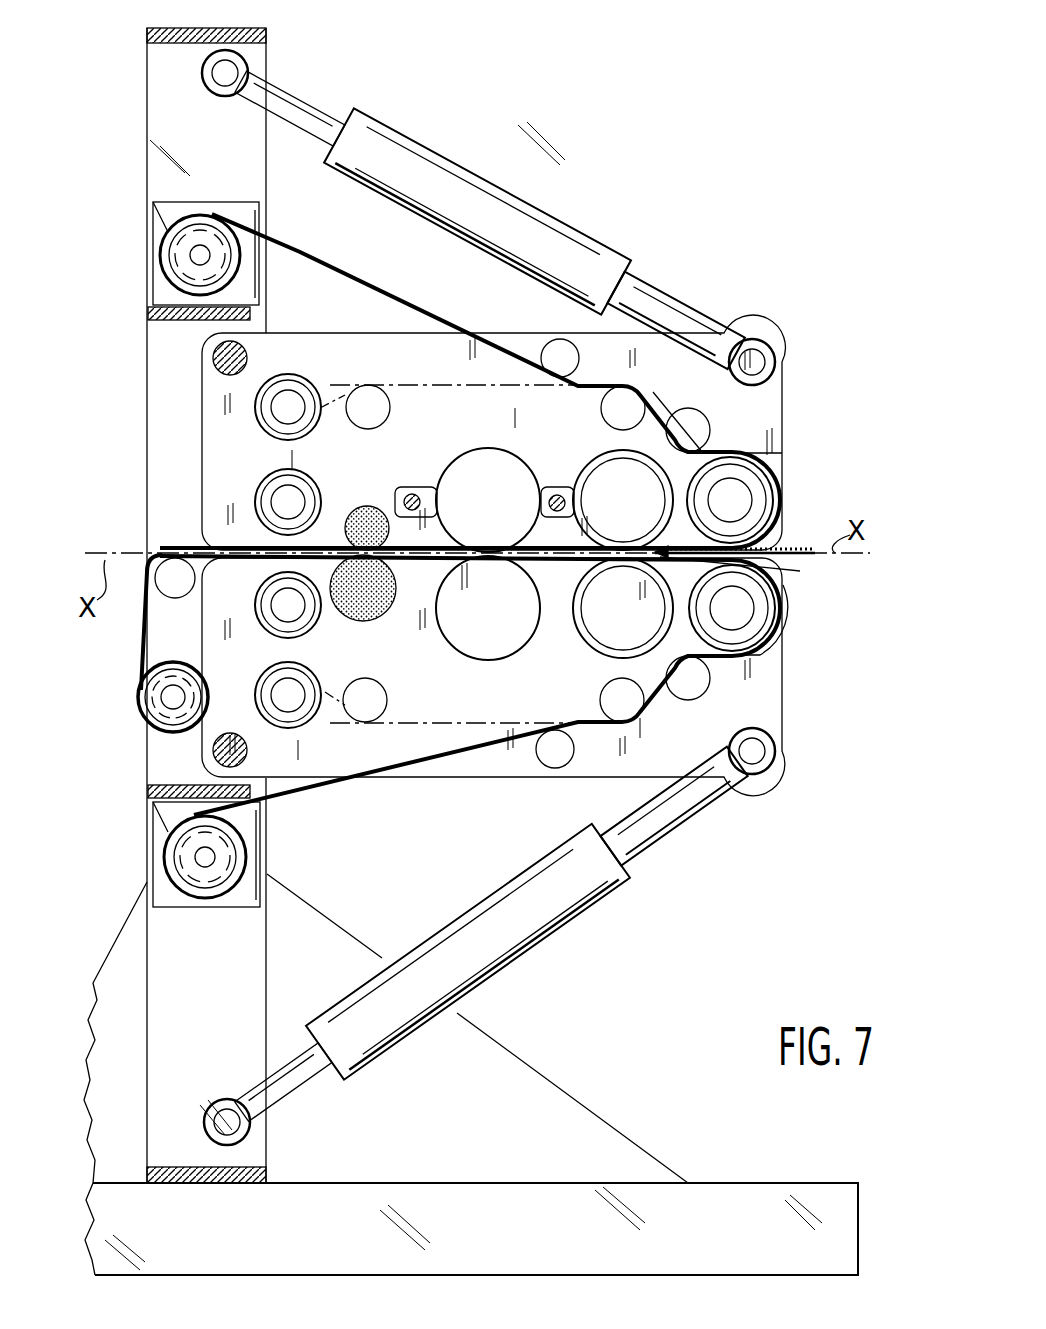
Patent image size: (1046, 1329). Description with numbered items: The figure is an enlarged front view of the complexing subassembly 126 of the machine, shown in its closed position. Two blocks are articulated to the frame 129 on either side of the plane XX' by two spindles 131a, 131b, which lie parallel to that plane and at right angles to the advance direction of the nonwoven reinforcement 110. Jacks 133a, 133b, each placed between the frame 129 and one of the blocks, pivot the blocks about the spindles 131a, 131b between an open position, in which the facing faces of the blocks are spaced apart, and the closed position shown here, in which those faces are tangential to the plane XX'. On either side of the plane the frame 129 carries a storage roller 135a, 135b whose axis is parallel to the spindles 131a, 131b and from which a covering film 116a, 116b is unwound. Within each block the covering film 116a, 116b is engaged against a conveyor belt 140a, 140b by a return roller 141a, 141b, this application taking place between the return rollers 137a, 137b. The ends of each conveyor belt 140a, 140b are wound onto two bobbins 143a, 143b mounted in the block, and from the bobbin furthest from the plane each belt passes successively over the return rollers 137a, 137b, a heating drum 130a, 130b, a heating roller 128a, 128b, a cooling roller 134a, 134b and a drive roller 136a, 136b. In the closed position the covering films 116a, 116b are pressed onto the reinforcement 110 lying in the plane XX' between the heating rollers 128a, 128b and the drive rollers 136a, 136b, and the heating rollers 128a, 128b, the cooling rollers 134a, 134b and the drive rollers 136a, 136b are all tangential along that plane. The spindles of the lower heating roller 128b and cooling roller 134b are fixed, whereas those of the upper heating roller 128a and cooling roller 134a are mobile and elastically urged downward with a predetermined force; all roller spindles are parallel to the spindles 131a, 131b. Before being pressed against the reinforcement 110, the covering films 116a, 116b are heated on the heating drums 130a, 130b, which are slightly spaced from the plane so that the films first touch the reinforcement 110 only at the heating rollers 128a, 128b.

The nonwoven reinforcement 110 is at (800, 558).
The covering film 116a is at (332, 278).
The covering film 116b is at (291, 798).
The complexing subassembly 126 is at (620, 188).
The heating roller 128a is at (600, 485).
The heating roller 128b is at (600, 622).
The frame 129 is at (155, 78).
The heating drum 130a is at (742, 497).
The heating drum 130b is at (742, 615).
The spindle 131a is at (227, 358).
The spindle 131b is at (227, 750).
The jack 133a is at (447, 172).
The jack 133b is at (552, 905).
The cooling roller 134a is at (470, 478).
The cooling roller 134b is at (470, 630).
The storage roller 135a is at (178, 256).
The storage roller 135b is at (193, 838).
The drive roller 136a is at (366, 528).
The drive roller 136b is at (358, 588).
The return rollers 137a is at (365, 400).
The return rollers 137b is at (366, 705).
The conveyor belt 140a is at (506, 396).
The conveyor belt 140b is at (456, 740).
The return roller 141a is at (557, 352).
The return roller 141b is at (555, 768).
The bobbins 143a is at (285, 500).
The bobbins 143b is at (287, 694).